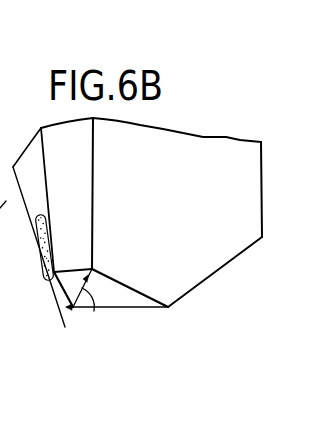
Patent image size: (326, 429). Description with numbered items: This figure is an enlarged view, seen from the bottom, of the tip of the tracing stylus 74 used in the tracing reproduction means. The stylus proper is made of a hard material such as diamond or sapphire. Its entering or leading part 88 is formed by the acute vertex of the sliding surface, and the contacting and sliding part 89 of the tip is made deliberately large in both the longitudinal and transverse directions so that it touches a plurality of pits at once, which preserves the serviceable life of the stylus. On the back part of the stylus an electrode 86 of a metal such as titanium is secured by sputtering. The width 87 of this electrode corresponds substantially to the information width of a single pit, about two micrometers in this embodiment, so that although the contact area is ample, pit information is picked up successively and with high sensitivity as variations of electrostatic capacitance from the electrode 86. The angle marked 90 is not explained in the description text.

The tracing stylus 74 is at (234, 119).
The electrode 86 is at (40, 249).
The width of the electrode 87 is at (57, 317).
The entering or leading part 88 is at (169, 308).
The contacting and sliding part 89 is at (124, 300).
The clearance angle 90 is at (93, 307).